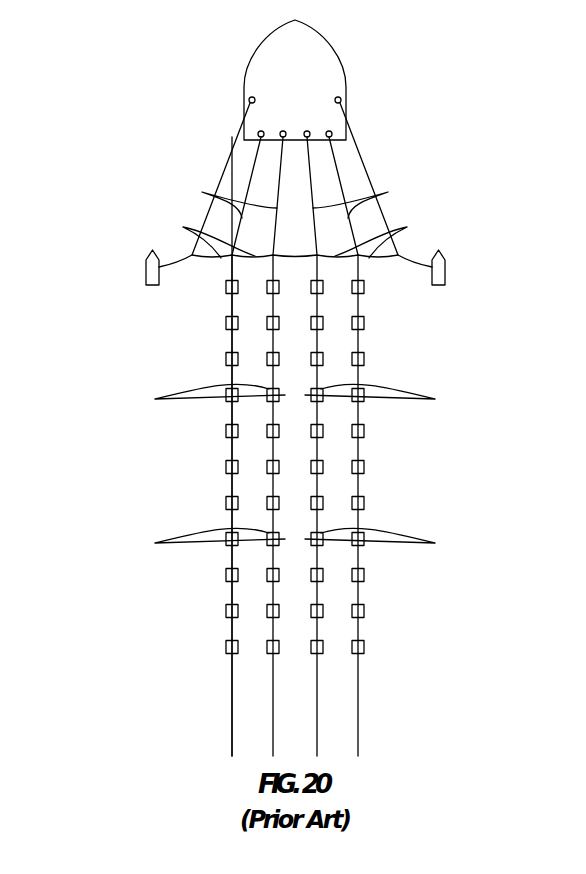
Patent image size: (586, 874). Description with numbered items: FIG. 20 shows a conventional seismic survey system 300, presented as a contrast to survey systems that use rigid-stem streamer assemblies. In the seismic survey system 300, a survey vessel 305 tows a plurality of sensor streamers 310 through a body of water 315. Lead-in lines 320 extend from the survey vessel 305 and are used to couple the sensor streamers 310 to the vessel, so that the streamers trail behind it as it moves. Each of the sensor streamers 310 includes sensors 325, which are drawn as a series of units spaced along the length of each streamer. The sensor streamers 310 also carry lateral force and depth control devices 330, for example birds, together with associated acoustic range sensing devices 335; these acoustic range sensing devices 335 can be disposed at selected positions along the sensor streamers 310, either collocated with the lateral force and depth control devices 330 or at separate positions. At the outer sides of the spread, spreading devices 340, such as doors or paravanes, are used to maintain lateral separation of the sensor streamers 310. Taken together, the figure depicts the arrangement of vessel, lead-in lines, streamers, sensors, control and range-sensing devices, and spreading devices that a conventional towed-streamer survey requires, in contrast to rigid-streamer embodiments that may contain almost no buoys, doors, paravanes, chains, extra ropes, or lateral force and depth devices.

The seismic survey system 300 is at (410, 68).
The survey vessel 305 is at (323, 37).
The sensor streamers 310 is at (410, 227).
The body of water 315 is at (210, 87).
The lead-in lines 320 is at (295, 200).
The sensors 325 is at (294, 480).
The lateral force and depth control devices 330 is at (295, 470).
The acoustic range sensing devices 335 is at (294, 480).
The spreading devices 340 is at (146, 266).